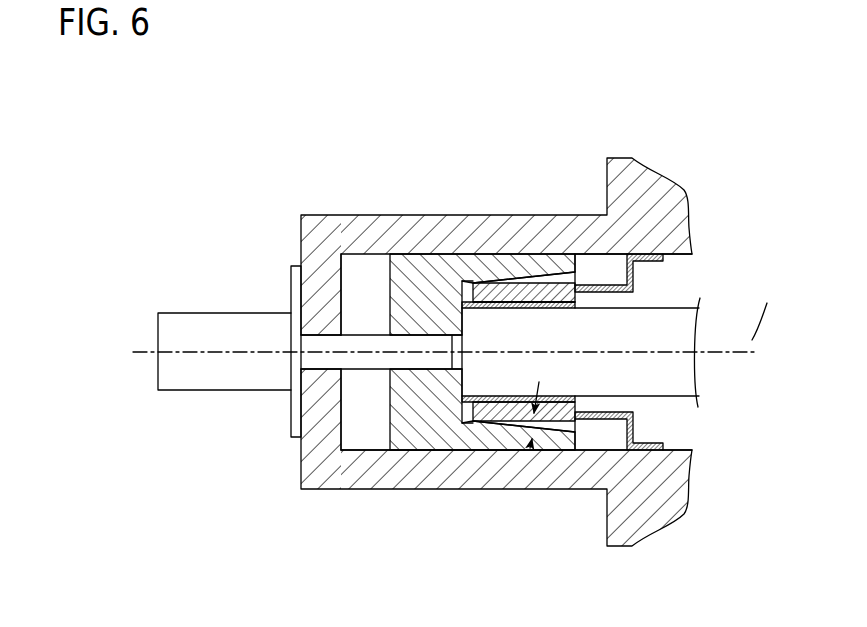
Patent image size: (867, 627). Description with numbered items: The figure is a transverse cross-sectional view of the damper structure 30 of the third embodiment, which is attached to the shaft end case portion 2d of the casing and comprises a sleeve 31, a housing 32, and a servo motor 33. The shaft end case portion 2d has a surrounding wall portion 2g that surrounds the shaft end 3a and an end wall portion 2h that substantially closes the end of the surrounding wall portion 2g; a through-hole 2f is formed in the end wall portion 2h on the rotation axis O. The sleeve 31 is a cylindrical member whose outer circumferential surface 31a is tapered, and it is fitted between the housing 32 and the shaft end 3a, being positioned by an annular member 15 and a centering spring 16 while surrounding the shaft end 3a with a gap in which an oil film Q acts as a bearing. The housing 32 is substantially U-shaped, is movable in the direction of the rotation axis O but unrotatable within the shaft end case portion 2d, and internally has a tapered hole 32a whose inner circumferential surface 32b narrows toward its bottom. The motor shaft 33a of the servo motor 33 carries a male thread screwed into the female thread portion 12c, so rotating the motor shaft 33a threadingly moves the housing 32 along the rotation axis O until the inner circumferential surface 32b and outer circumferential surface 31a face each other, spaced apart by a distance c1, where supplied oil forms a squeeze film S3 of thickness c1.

The damper structure 30 is at (210, 181).
The servo motor 33 is at (187, 309).
The motor shaft 33a is at (358, 343).
The housing 32 is at (380, 278).
The tapered hole 32a is at (465, 430).
The inner circumferential surface 32b is at (482, 292).
The sleeve 31 is at (594, 280).
The outer circumferential surface 31a is at (518, 274).
The squeeze film S3 is at (557, 272).
The annular member 15 is at (640, 277).
The centering spring 16 is at (608, 293).
The oil film Q is at (553, 308).
The shaft end 3a is at (557, 370).
The shaft end case portion 2d is at (423, 500).
The through-hole 2f is at (322, 369).
The surrounding wall portion 2g is at (392, 476).
The end wall portion 2h is at (290, 422).
The female thread portion 12c is at (402, 365).
The distance c1 is at (531, 448).
The rotation axis O is at (766, 312).